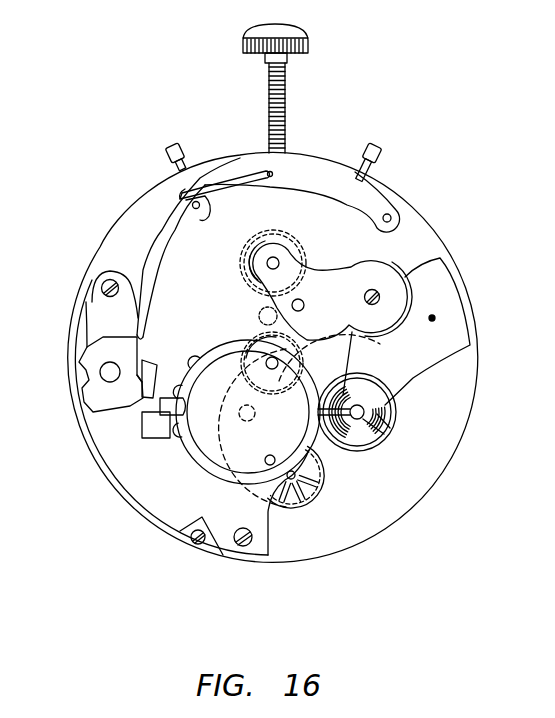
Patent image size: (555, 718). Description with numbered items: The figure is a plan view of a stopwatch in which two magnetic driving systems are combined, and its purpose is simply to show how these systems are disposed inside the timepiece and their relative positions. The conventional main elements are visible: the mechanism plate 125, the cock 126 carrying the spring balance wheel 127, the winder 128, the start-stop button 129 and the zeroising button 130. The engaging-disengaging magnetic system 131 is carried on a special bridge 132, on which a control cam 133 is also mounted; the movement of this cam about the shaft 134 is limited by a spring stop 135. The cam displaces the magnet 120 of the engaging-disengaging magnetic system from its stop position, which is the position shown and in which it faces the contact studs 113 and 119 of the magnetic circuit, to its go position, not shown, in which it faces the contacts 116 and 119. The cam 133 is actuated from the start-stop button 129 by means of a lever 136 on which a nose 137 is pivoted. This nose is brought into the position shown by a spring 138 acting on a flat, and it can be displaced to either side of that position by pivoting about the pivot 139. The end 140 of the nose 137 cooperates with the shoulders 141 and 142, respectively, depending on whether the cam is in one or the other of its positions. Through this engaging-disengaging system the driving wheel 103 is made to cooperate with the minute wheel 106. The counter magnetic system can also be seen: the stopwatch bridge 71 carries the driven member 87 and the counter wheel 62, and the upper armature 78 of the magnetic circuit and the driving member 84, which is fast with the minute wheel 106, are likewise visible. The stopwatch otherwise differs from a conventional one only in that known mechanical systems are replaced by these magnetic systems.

The counter wheel 62 is at (282, 237).
The stopwatch bridge 71 is at (327, 272).
The upper armature 78 is at (385, 277).
The driving member 84 is at (262, 320).
The driven member 87 is at (248, 285).
The driving wheel 103 is at (313, 487).
The minute wheel 106 is at (260, 309).
The contact stud 113 is at (180, 433).
The contact 116 is at (193, 345).
The contact stud 119 is at (186, 400).
The magnet 120 is at (142, 420).
The mechanism plate 125 is at (435, 478).
The cock 126 is at (437, 355).
The spring balance wheel 127 is at (368, 452).
The winder 128 is at (287, 87).
The start-stop button 129 is at (375, 148).
The zeroising button 130 is at (167, 145).
The engaging-disengaging magnetic system 131 is at (192, 452).
The special bridge 132 is at (253, 555).
The control cam 133 is at (85, 350).
The shaft 134 is at (99, 372).
The spring stop 135 is at (75, 425).
The lever 136 is at (315, 177).
The nose 137 is at (160, 240).
The spring 138 is at (233, 178).
The pivot 139 is at (210, 210).
The end 140 is at (137, 332).
The shoulder 141 is at (147, 366).
The shoulder 142 is at (87, 345).